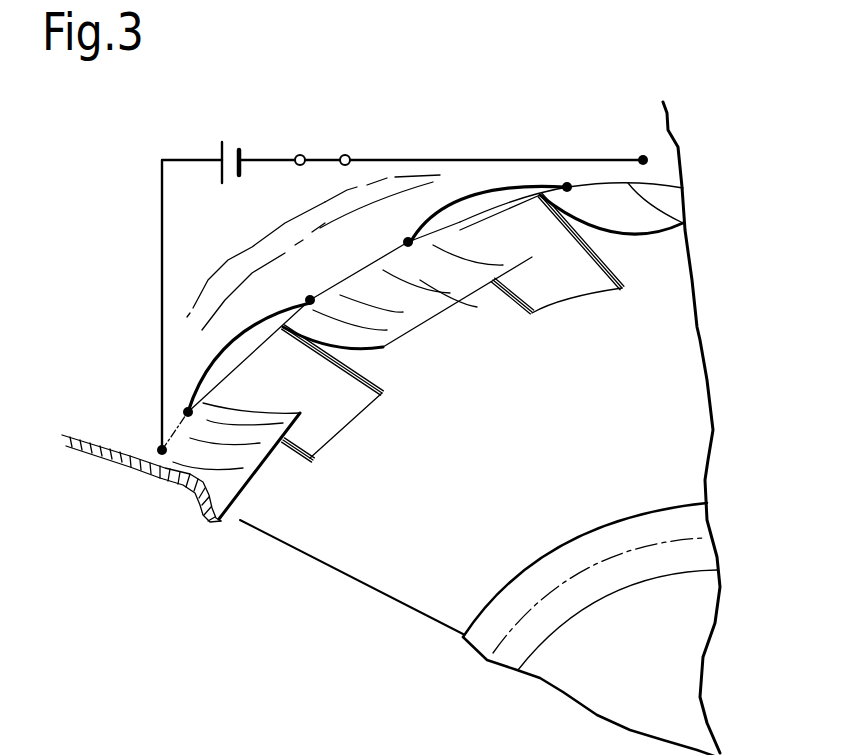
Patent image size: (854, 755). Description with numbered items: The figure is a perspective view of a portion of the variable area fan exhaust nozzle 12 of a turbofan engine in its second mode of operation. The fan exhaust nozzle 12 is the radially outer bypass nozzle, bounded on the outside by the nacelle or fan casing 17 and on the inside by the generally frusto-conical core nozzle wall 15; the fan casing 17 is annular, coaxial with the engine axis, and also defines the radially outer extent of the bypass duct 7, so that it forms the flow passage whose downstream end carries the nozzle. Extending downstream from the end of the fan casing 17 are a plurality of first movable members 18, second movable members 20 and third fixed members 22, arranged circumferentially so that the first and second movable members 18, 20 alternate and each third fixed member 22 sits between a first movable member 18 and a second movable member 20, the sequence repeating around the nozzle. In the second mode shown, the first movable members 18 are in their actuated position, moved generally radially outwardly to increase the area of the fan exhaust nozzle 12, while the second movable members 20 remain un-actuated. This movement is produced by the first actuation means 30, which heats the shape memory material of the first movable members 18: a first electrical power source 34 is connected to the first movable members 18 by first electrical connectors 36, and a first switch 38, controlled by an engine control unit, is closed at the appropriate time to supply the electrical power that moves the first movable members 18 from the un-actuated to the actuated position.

The bypass duct 7 is at (692, 382).
The variable area fan exhaust nozzle 12 is at (713, 275).
The core nozzle wall 15 is at (683, 535).
The nacelle or fan casing 17 is at (272, 242).
The first movable members 18 is at (238, 480).
The second movable members 20 is at (323, 418).
The third fixed members 22 is at (308, 459).
The first actuation means 30 is at (283, 133).
The first electrical power source 34 is at (215, 157).
The first electrical connectors 36 is at (481, 159).
The first switch 38 is at (325, 160).